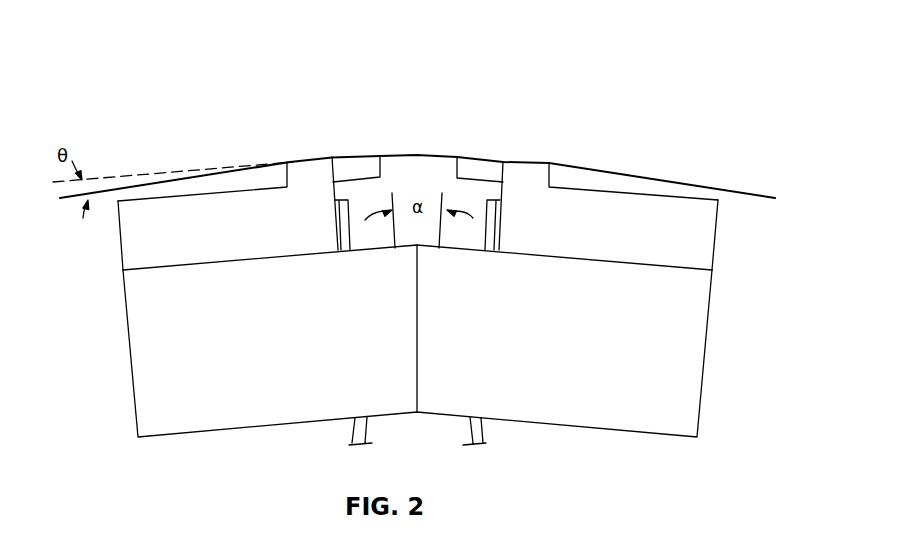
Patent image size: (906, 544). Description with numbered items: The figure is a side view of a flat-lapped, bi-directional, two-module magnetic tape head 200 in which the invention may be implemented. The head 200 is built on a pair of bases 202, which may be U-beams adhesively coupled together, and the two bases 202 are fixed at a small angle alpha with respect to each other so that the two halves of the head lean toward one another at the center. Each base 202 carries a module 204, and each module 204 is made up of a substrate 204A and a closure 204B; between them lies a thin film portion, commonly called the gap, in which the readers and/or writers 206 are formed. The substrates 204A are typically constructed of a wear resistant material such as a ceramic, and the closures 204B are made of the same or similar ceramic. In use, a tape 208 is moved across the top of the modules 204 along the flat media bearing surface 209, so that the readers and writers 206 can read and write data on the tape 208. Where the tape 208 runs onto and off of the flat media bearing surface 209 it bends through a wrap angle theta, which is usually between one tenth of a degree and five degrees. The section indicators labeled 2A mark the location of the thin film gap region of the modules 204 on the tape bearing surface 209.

The two-module magnetic tape head 200 is at (421, 235).
The bases 202 is at (128, 332).
The module 204 is at (421, 196).
The substrate 204A is at (177, 220).
The closure 204B is at (452, 172).
The readers and/or writers 206 is at (340, 149).
The tape 208 is at (637, 172).
The media bearing surface 209 is at (286, 152).
The section line 2A- 2A is at (305, 124).